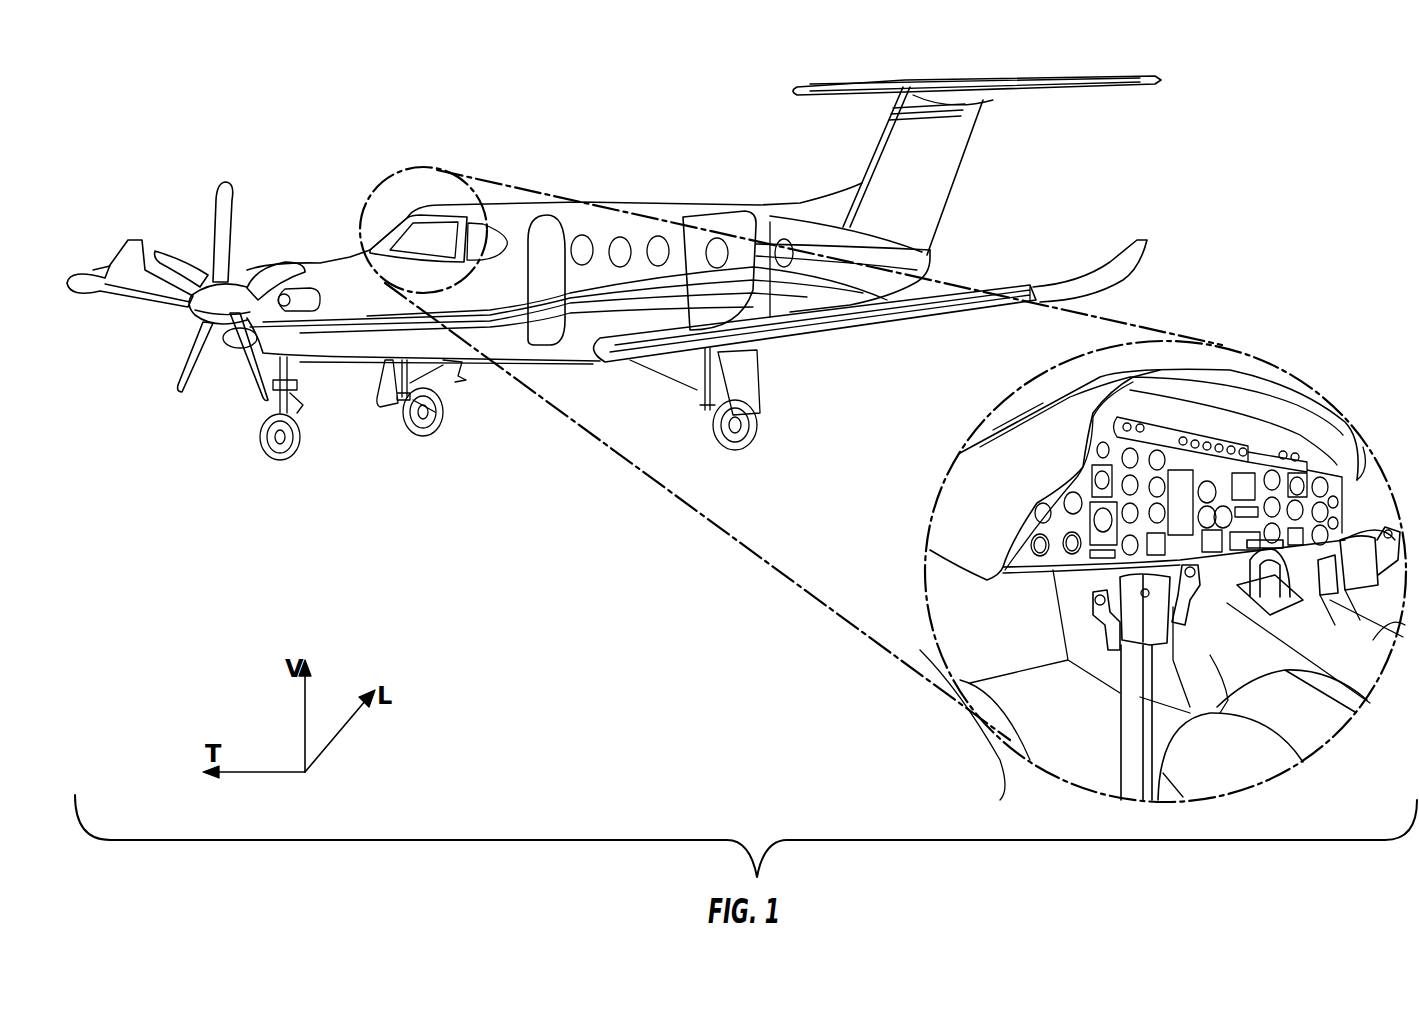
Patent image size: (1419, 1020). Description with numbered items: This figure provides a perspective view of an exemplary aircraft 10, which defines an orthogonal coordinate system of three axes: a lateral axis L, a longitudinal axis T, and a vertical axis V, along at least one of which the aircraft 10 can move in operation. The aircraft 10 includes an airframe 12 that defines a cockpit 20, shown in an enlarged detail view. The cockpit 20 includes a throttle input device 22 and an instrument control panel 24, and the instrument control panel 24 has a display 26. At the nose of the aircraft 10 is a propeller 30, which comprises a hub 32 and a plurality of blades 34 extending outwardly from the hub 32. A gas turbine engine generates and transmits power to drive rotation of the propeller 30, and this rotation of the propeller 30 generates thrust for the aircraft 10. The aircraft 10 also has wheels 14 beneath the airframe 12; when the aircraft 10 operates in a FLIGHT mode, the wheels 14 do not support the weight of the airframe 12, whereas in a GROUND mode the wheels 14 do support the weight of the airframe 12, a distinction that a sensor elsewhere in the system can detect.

The aircraft 10 is at (172, 528).
The airframe 12 is at (656, 205).
The wheels 14 is at (298, 465).
The cockpit 20 is at (1103, 362).
The throttle input device 22 is at (1243, 575).
The instrument control panel 24 is at (1183, 478).
The display 26 is at (1205, 475).
The propeller 30 is at (172, 418).
The hub 32 is at (203, 315).
The blades 34 is at (165, 262).